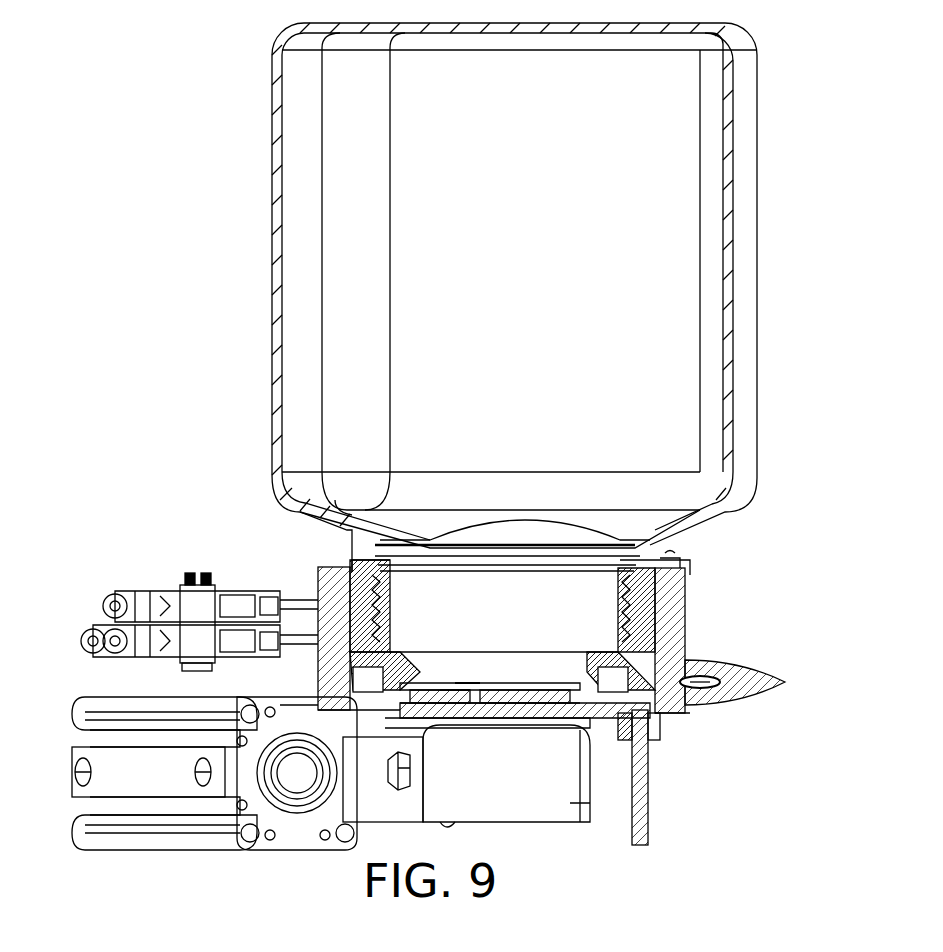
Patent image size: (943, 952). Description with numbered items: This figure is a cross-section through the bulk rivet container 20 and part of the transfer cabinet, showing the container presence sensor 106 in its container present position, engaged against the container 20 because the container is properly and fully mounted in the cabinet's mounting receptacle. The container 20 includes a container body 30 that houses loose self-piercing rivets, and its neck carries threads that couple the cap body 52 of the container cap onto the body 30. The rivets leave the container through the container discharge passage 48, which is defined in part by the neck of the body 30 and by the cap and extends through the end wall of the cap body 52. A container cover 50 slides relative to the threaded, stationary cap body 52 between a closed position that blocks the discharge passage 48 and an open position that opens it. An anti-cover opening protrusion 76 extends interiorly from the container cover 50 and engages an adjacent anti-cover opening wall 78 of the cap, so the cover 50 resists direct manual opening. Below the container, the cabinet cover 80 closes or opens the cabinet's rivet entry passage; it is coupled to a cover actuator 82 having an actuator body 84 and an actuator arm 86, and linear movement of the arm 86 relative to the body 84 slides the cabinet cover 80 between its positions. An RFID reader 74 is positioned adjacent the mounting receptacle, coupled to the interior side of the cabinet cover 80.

The bulk rivet container 20 is at (773, 63).
The container body 30 is at (745, 296).
The container discharge passage 48 is at (563, 672).
The container cover 50 is at (485, 686).
The cap body 52 is at (648, 628).
The RFID reader 74 is at (518, 803).
The anti-cover opening protrusion 76 is at (465, 680).
The anti-cover opening wall 78 is at (458, 683).
The cabinet cover 80 is at (580, 715).
The cover actuator 82 is at (130, 850).
The actuator body 84 is at (102, 768).
The actuator arm 86 is at (305, 785).
The container presence sensor 106 is at (640, 833).